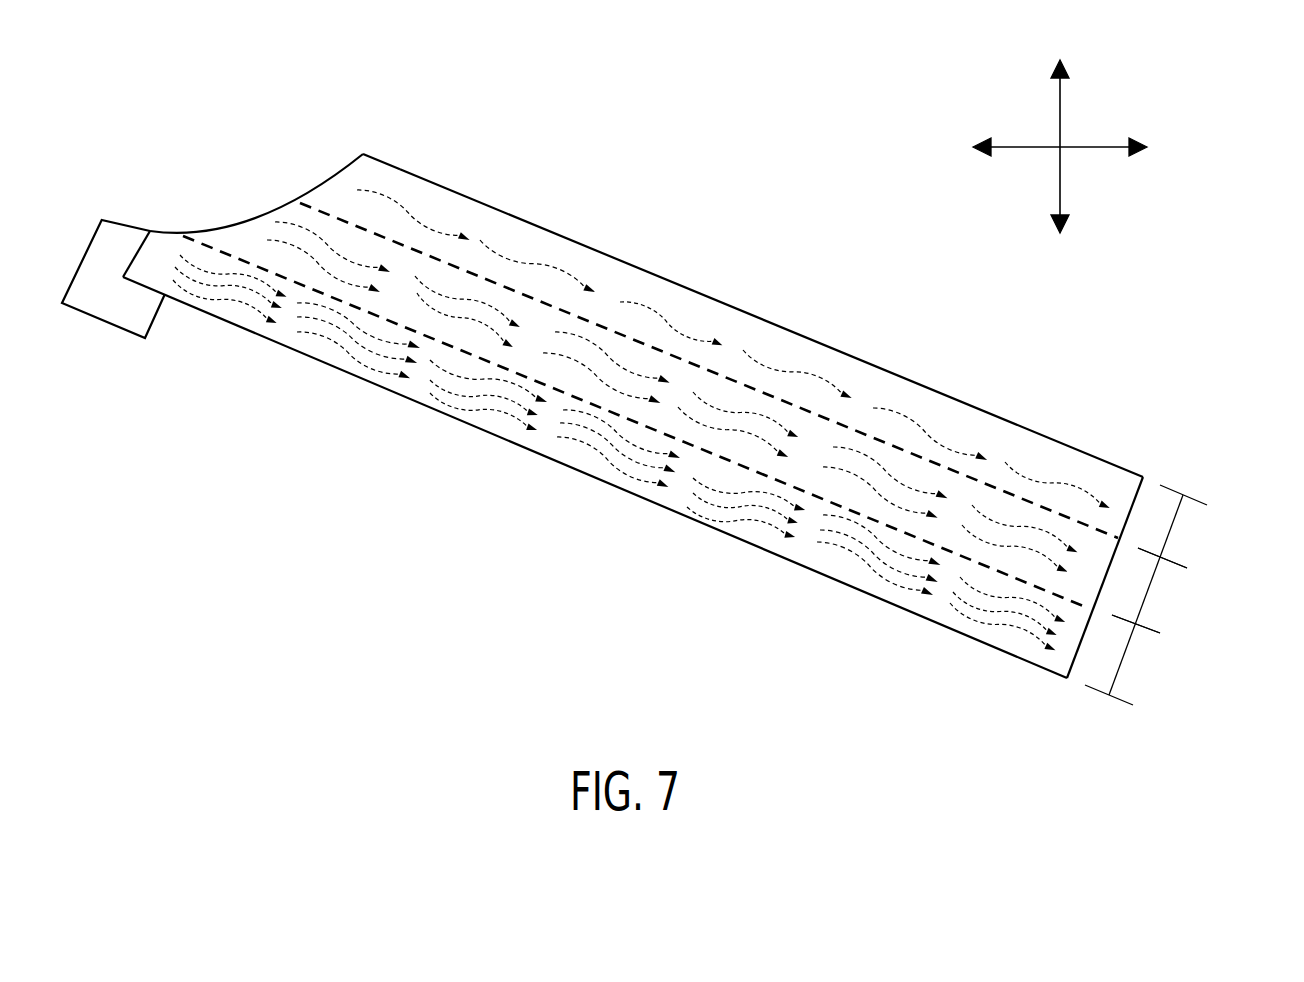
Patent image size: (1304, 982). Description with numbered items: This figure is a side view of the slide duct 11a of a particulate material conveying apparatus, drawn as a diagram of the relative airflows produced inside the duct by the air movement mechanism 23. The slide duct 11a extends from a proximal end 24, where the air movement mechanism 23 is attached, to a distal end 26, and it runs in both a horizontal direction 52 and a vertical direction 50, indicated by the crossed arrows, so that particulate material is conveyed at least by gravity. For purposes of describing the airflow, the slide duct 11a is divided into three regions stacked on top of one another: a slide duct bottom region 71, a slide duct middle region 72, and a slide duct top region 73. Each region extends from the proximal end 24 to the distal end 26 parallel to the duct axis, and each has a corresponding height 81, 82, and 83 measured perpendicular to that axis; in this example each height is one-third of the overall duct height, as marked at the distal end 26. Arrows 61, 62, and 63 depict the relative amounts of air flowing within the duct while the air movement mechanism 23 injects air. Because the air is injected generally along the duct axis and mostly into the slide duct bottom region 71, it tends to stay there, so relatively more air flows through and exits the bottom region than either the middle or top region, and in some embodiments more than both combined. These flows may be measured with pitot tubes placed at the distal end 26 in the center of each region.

The slide duct 11a is at (782, 327).
The air movement mechanism 23 is at (110, 312).
The proximal end 24 is at (146, 230).
The distal end 26 is at (1072, 665).
The vertical direction 50 is at (1060, 105).
The horizontal direction 52 is at (1093, 147).
The arrows 61 is at (386, 354).
The arrows 62 is at (339, 246).
The arrows 63 is at (635, 300).
The slide duct bottom region 71 is at (163, 253).
The slide duct middle region 72 is at (258, 210).
The slide duct top region 73 is at (343, 167).
The height 81 is at (1123, 652).
The height 82 is at (1158, 597).
The height 83 is at (1173, 523).